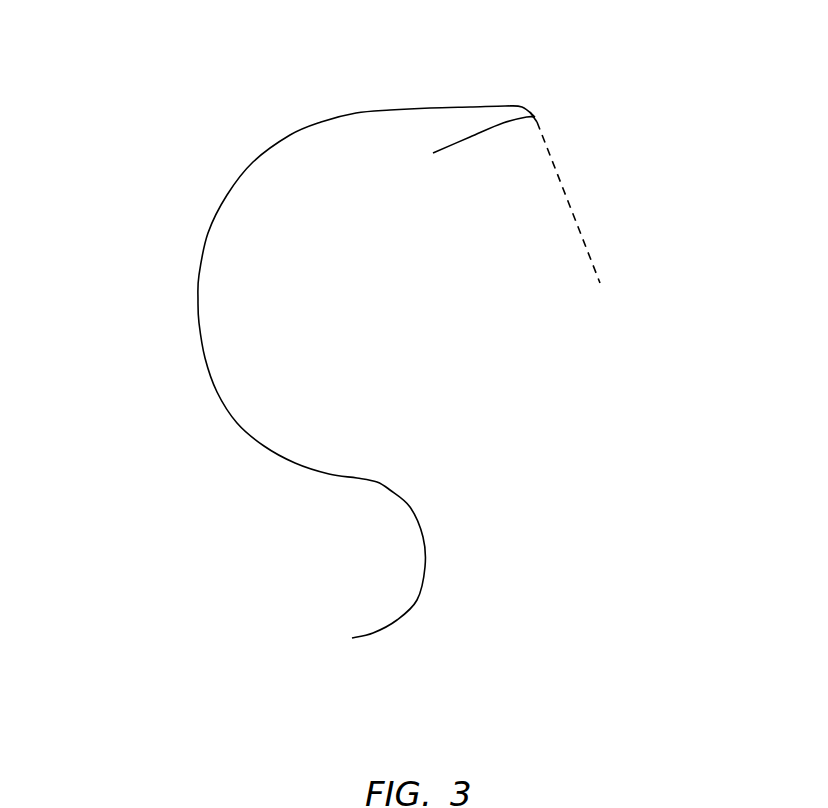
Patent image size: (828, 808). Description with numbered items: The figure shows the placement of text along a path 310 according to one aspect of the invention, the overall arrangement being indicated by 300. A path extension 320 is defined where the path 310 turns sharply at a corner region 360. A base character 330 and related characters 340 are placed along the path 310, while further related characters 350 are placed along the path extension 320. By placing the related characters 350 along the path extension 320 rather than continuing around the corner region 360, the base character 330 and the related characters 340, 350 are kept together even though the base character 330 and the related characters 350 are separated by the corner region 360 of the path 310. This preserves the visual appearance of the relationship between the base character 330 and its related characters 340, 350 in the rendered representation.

The swing path diagram 300 is at (158, 69).
The path 310 is at (297, 130).
The path extension 320 is at (575, 200).
The base character 330 is at (527, 71).
The related characters 340 is at (593, 22).
The related characters 350 is at (625, 67).
The corner region 360 is at (547, 110).